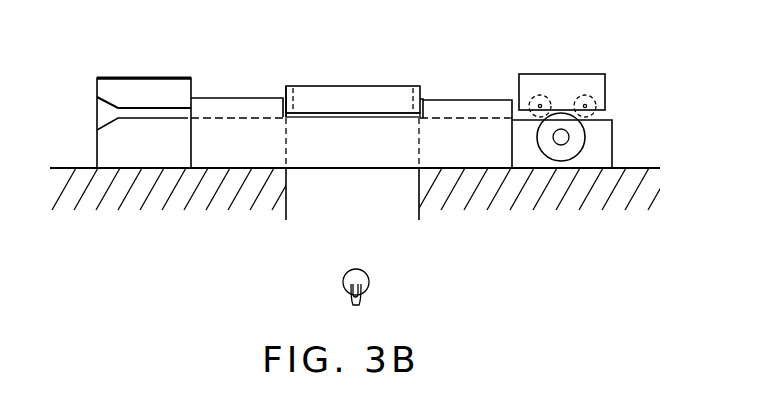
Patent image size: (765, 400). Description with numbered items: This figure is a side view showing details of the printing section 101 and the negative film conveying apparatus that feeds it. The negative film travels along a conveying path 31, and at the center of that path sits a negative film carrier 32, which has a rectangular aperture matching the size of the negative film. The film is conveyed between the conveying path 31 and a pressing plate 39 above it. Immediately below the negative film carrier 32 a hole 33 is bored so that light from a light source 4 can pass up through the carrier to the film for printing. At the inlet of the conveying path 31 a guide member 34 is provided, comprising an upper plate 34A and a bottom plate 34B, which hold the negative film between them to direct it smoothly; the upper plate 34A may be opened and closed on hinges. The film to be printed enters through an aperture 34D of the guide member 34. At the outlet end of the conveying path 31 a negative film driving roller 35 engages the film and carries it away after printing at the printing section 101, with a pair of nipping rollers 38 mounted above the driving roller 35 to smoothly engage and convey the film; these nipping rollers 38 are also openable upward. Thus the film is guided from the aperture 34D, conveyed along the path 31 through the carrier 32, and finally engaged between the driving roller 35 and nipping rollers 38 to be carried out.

The light source 4 is at (343, 280).
The conveying path 31 is at (227, 117).
The negative film carrier 32 is at (444, 93).
The hole 33 is at (383, 206).
The guide member 34 is at (172, 76).
The upper plate 34A is at (118, 77).
The bottom plate 34B is at (97, 155).
The aperture 34D is at (104, 108).
The negative film driving roller 35 is at (585, 137).
The nipping rollers 38 is at (607, 88).
The pressing plate 39 is at (305, 85).
The printing section 101 is at (352, 72).